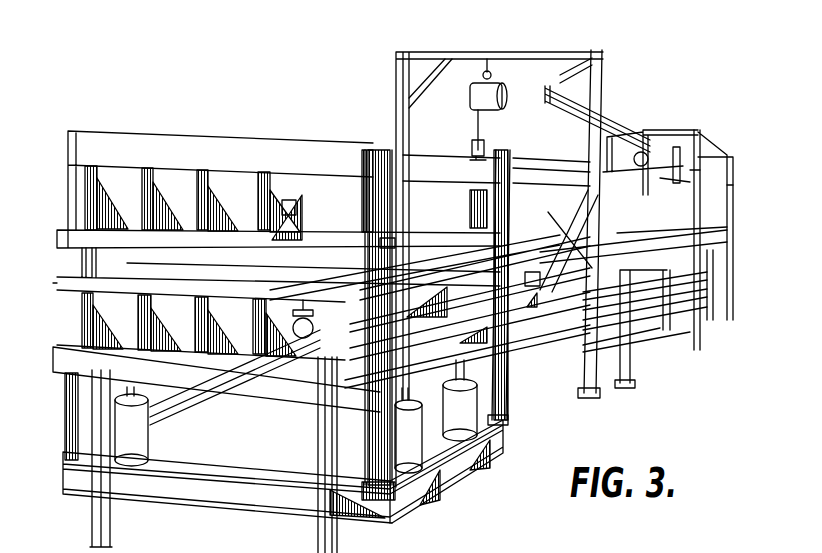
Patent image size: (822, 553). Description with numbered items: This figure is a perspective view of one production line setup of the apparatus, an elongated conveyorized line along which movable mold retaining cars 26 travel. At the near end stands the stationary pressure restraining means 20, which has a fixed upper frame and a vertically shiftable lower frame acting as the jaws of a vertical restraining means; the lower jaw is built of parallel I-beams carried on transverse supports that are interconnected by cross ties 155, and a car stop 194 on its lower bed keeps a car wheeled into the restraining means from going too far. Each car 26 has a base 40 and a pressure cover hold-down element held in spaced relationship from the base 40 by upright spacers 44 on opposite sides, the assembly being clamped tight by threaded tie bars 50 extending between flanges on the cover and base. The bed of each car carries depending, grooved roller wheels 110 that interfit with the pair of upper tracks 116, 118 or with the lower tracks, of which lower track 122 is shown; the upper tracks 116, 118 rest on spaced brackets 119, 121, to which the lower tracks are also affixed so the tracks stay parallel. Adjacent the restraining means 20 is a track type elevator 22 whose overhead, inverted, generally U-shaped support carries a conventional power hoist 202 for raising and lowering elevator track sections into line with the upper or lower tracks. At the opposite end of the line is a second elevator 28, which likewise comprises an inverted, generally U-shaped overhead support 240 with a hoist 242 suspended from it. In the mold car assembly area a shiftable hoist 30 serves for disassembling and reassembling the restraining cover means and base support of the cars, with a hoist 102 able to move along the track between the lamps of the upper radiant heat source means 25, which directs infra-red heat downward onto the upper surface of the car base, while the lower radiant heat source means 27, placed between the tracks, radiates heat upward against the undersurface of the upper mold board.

The pressure restraining means 20 is at (240, 135).
The elevator 22 is at (436, 52).
The upper radiant heat source means 25 is at (662, 180).
The mold retaining car 26 is at (62, 227).
The lower radiant heat source means 27 is at (562, 260).
The second elevator 28 is at (712, 155).
The shiftable hoist 30 is at (664, 92).
The base 40 is at (60, 284).
The upright spacers 44 is at (387, 240).
The threaded tie bars 50 is at (285, 215).
The hoist 102 is at (647, 170).
The roller wheels 110 is at (305, 345).
The upper track 116 is at (645, 221).
The upper track 118 is at (710, 253).
The bracket 119 is at (707, 287).
The bracket 121 is at (690, 323).
The lower track 122 is at (680, 307).
The cross ties 155 is at (462, 362).
The car stop 194 is at (167, 297).
The power hoist 202 is at (500, 97).
The inverted U-shaped overhead support 240 is at (732, 188).
The hoist 242 is at (692, 173).